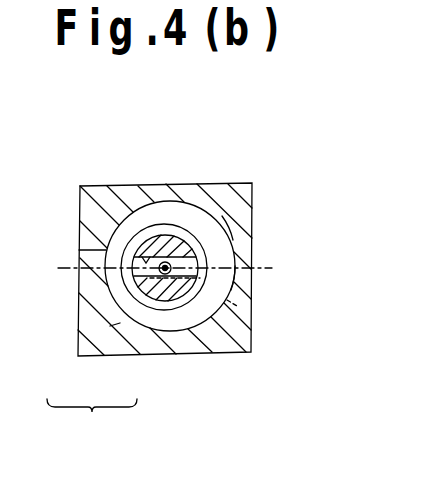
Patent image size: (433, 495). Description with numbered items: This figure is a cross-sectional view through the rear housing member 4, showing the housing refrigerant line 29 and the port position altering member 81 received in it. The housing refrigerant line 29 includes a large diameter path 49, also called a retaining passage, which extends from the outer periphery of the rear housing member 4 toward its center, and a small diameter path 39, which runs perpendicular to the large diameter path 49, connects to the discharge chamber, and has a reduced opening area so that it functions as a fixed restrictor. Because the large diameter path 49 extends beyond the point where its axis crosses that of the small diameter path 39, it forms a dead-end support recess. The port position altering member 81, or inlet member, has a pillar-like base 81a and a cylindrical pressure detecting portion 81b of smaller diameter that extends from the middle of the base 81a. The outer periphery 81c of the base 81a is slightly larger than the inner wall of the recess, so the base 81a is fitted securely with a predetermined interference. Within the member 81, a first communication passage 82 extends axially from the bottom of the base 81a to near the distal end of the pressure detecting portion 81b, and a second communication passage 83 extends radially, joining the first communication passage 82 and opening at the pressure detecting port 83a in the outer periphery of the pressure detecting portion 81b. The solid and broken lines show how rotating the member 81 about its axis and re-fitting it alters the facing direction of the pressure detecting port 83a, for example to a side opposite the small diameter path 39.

The rear housing member 4 is at (209, 192).
The housing refrigerant line 29 is at (92, 421).
The small diameter path 39 is at (86, 279).
The large diameter path 49 is at (120, 323).
The port position altering member 81 is at (300, 366).
The base 81a is at (178, 356).
The pressure detecting portion 81b is at (233, 208).
The outer periphery 81c is at (240, 273).
The first communication passage 82 is at (139, 236).
The second communication passage 83 is at (128, 190).
The pressure detecting port 83a is at (84, 240).